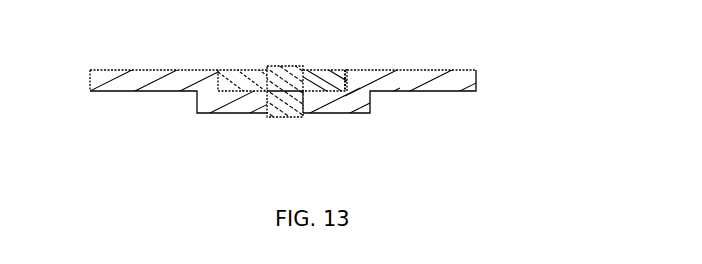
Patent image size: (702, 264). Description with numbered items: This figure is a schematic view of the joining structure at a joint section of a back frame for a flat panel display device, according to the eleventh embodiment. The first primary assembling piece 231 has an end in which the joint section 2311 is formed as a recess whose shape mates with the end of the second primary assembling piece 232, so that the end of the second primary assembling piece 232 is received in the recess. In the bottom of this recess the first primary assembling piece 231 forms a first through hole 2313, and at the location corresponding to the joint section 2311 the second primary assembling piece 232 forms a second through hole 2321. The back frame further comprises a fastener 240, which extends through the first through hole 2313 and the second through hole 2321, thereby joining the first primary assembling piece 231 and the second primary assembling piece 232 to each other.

The first primary assembling piece 231 is at (456, 69).
The joint section 2311 is at (347, 72).
The first through hole 2313 is at (303, 98).
The second primary assembling piece 232 is at (230, 68).
The second through hole 2321 is at (268, 74).
The fastener 240 is at (284, 64).